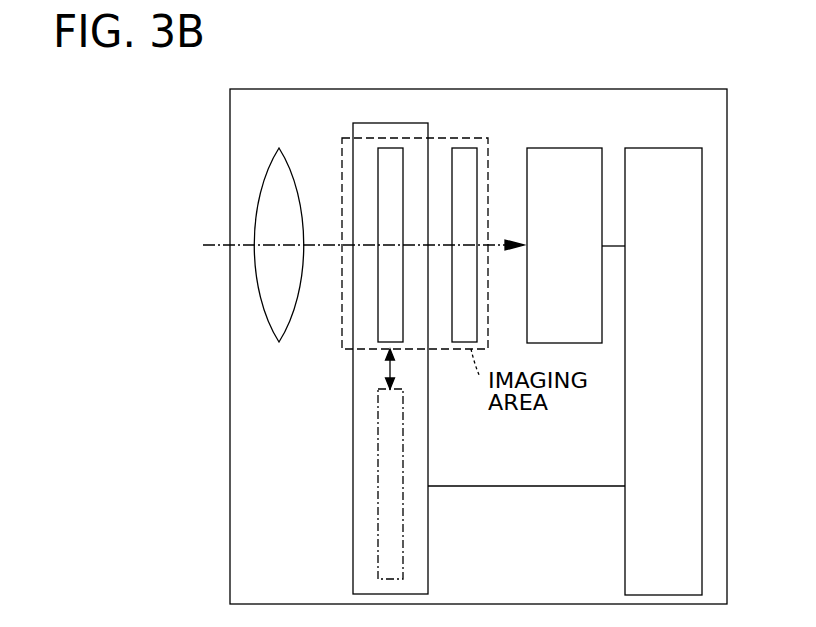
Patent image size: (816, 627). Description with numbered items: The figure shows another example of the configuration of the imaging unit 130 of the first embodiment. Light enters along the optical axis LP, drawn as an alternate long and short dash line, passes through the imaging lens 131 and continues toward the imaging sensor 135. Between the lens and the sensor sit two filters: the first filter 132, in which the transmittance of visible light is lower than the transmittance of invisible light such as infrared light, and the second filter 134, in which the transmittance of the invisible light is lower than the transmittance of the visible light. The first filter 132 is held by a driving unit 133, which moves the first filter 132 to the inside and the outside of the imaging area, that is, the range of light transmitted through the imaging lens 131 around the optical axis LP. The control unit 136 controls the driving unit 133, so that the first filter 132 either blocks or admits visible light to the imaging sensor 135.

The imaging unit 130 is at (681, 88).
The imaging lens 131 is at (278, 148).
The first filter 132 is at (391, 148).
The driving unit 133 is at (429, 134).
The second filter 134 is at (473, 147).
The imaging sensor 135 is at (567, 147).
The control unit 136 is at (651, 147).
The optical axis LP is at (211, 243).